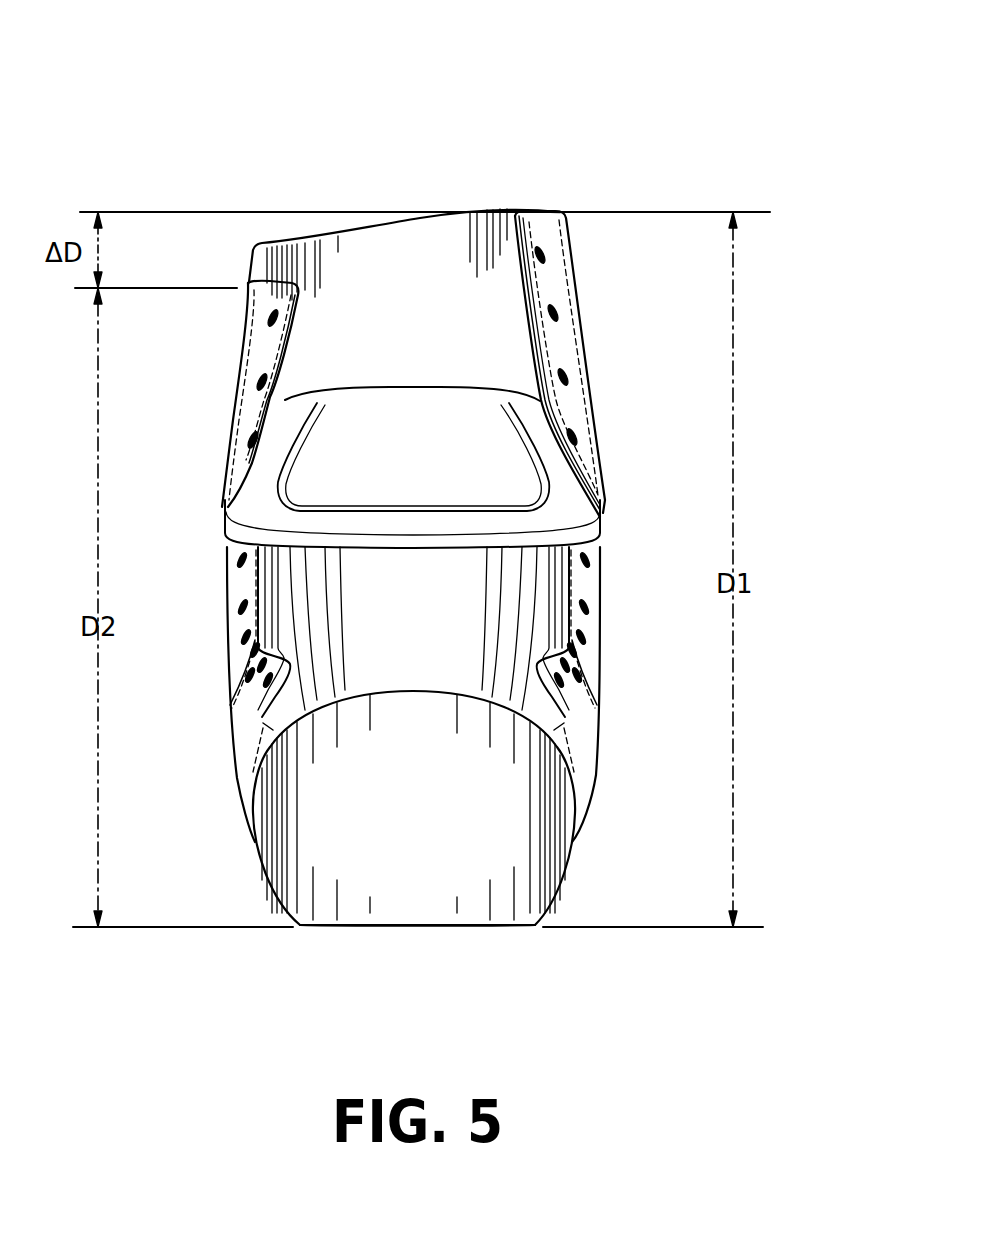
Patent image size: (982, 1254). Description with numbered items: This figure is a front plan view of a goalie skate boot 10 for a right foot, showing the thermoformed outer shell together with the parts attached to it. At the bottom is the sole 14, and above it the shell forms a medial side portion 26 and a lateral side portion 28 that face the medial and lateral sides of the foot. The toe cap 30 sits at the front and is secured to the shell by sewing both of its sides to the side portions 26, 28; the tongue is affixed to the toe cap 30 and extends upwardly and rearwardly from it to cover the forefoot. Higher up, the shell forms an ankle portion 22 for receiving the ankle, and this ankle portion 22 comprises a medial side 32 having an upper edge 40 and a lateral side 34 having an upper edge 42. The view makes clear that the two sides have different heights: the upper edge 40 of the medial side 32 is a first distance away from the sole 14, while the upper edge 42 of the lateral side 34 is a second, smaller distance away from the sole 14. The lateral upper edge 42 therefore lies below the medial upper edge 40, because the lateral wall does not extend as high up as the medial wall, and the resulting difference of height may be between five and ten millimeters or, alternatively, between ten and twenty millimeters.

The skate boot 10 is at (668, 95).
The sole 14 is at (428, 953).
The ankle portion 22 is at (423, 328).
The medial side portion 26 is at (587, 725).
The lateral side portion 28 is at (248, 740).
The toe cap 30 is at (373, 815).
The medial side 32 is at (577, 325).
The lateral side 34 is at (252, 332).
The upper edge 40 is at (540, 212).
The upper edge 42 is at (275, 272).